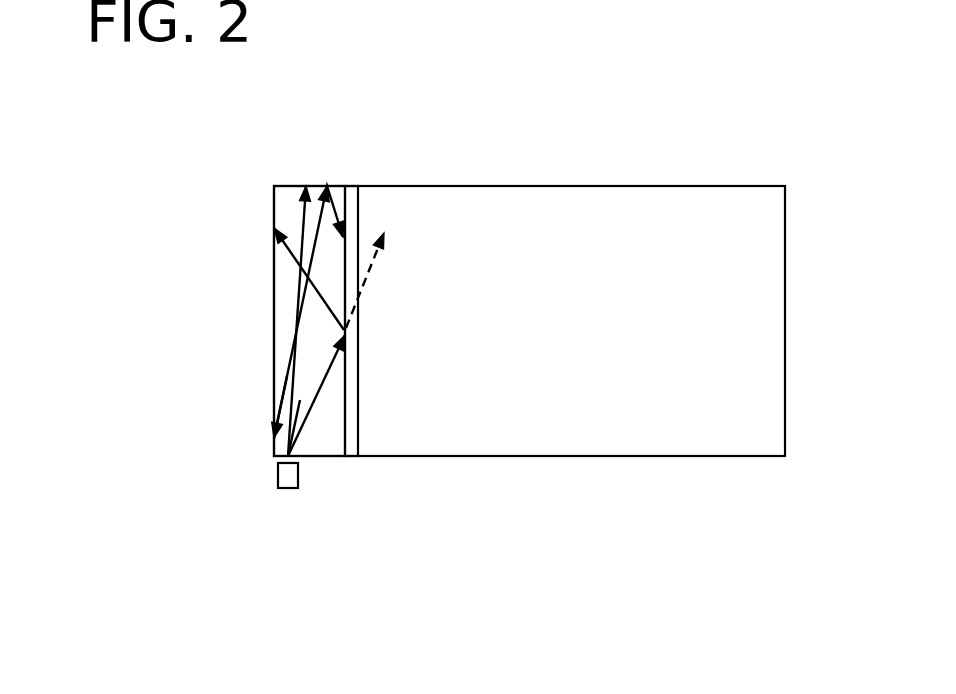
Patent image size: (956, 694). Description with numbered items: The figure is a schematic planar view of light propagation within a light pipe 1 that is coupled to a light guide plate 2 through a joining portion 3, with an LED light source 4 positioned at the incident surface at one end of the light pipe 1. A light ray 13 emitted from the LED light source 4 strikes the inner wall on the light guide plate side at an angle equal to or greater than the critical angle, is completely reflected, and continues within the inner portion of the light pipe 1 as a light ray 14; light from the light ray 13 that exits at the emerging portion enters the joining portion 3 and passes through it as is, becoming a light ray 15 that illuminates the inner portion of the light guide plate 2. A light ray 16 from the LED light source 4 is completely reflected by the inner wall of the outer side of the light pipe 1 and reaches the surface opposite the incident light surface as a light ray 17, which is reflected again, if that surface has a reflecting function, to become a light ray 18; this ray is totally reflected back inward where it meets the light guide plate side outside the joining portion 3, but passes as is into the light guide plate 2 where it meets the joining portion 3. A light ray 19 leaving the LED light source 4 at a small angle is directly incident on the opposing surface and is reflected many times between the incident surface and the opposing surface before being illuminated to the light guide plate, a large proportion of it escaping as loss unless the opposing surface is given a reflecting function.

The light pipe 1 is at (287, 300).
The light guide plate 2 is at (585, 213).
The joining portion 3 is at (352, 443).
The LED light source 4 is at (282, 488).
The light ray 13 is at (303, 417).
The light ray 14 is at (278, 252).
The light ray 15 is at (385, 253).
The light ray 16 is at (274, 453).
The light ray 17 is at (282, 383).
The light ray 18 is at (349, 197).
The light ray 19 is at (302, 211).